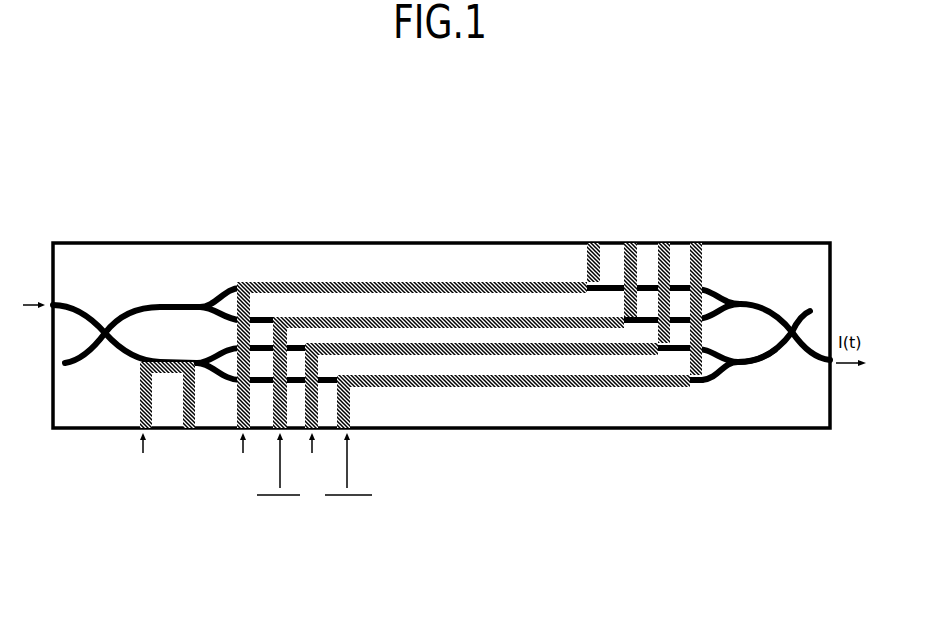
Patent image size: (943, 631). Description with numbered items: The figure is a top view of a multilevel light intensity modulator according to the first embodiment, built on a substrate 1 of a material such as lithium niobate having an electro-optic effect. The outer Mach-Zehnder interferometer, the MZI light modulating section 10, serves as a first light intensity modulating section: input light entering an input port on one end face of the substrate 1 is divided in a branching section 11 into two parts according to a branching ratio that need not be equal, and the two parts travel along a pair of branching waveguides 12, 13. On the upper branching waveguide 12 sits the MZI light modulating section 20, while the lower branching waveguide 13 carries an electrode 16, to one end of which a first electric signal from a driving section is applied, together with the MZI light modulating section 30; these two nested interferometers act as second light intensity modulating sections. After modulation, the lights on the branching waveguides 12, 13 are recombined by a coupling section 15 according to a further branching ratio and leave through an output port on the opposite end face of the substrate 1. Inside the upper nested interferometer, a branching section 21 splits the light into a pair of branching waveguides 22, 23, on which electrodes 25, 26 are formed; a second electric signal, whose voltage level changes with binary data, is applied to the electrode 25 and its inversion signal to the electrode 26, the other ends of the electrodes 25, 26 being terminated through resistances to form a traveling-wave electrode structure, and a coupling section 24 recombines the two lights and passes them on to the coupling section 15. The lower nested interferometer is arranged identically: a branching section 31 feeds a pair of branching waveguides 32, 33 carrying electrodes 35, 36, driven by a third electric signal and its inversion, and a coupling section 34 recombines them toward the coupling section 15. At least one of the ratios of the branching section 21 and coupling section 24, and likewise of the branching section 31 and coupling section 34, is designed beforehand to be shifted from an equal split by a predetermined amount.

The substrate 1 is at (800, 428).
The MZI light modulating section 10 is at (767, 134).
The branching section 11 is at (105, 327).
The branching waveguide 12 is at (150, 355).
The branching waveguide 13 is at (124, 323).
The coupling section 15 is at (792, 325).
The electrode 16 is at (180, 362).
The MZI light modulating section 20 is at (258, 178).
The branching section 21 is at (225, 297).
The branching waveguide 22 is at (260, 318).
The branching waveguide 23 is at (272, 282).
The coupling section 24 is at (735, 297).
The electrode 25 is at (478, 282).
The electrode 26 is at (537, 316).
The MZI light modulating section 30 is at (215, 548).
The branching section 31 is at (198, 372).
The branching waveguide 32 is at (688, 345).
The branching waveguide 33 is at (723, 343).
The coupling section 34 is at (737, 340).
The electrode 35 is at (467, 357).
The electrode 36 is at (523, 388).